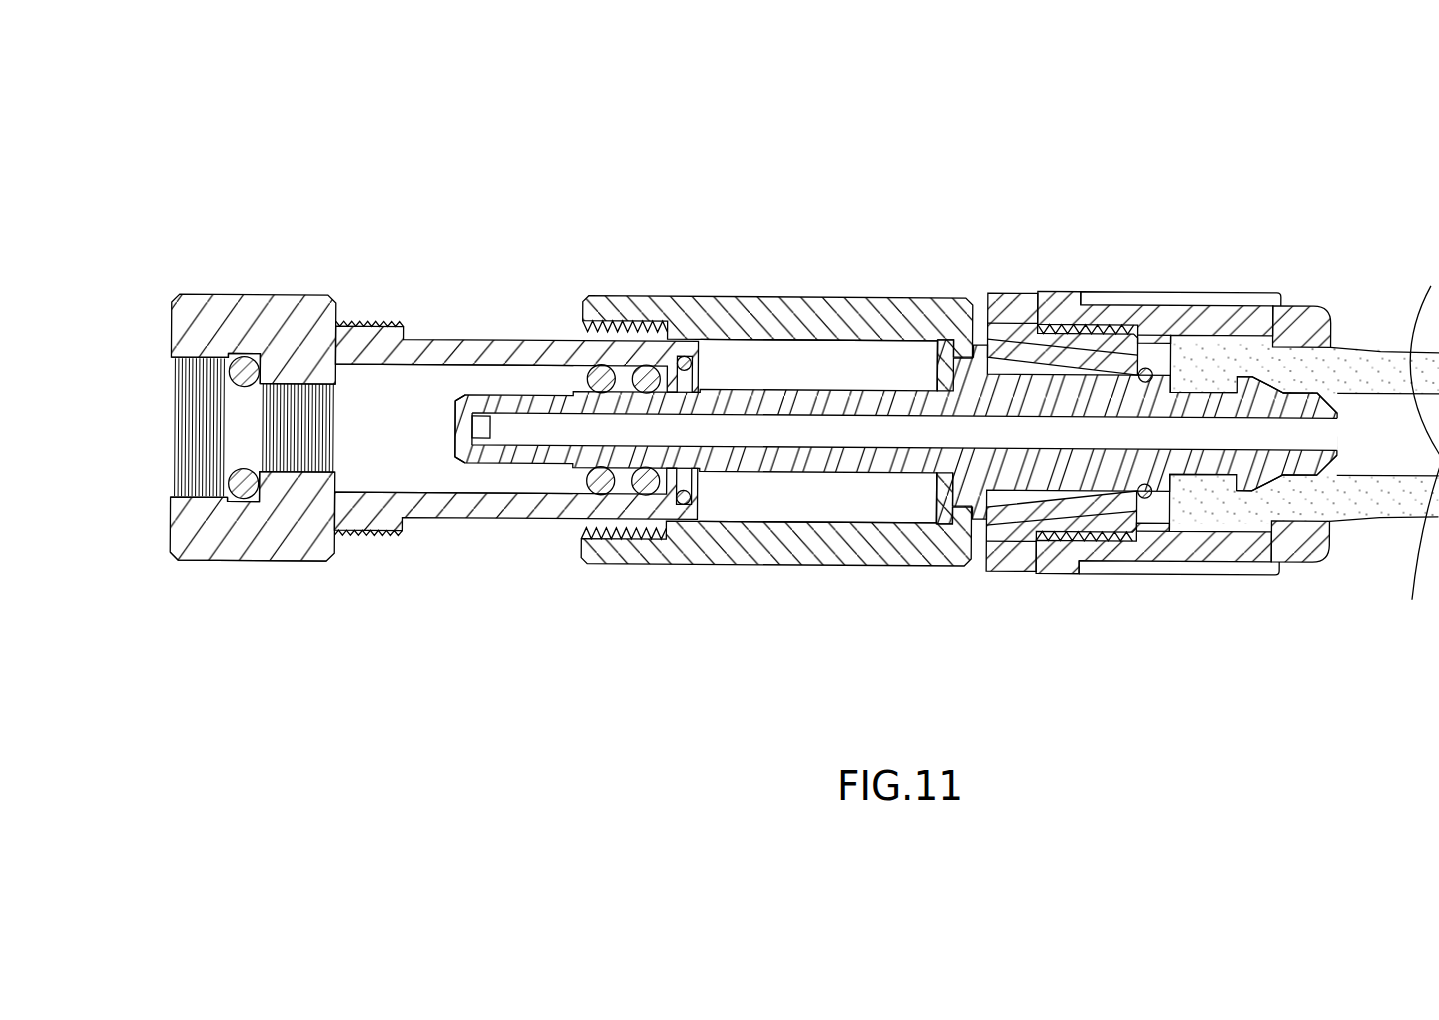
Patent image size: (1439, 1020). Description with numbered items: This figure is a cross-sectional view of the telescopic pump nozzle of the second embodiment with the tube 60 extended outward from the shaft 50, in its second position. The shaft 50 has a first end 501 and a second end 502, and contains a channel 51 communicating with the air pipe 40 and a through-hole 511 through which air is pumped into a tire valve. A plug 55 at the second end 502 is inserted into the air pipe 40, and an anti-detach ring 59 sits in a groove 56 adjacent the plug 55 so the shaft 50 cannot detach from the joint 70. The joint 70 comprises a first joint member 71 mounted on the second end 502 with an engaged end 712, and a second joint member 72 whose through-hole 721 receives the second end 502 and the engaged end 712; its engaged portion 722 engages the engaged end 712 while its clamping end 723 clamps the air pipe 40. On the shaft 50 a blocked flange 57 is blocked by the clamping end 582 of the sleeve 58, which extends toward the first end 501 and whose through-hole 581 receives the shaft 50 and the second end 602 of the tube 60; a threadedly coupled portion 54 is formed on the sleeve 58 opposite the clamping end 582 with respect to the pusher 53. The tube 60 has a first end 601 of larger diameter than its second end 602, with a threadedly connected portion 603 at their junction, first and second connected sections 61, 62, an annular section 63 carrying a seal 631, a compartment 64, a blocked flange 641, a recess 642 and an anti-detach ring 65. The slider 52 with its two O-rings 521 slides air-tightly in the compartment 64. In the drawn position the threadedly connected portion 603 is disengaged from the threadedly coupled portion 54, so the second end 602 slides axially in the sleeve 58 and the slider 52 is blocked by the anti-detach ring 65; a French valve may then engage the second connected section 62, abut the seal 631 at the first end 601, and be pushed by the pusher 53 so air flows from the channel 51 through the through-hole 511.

The air pipe 40 is at (1381, 372).
The shaft 50 is at (922, 440).
The first end 501 is at (470, 389).
The second end 502 is at (1281, 493).
The channel 51 is at (877, 435).
The through-hole 511 is at (478, 432).
The slider 52 is at (591, 516).
The O-rings 521 is at (590, 484).
The pusher 53 is at (462, 452).
The threadedly coupled portion 54 is at (805, 444).
The plug 55 is at (1262, 337).
The groove 56 is at (1146, 497).
The blocked flange 57 is at (967, 373).
The sleeve 58 is at (820, 308).
The through-hole 581 is at (892, 357).
The clamping end 582 is at (966, 514).
The anti-detach ring 59 is at (1146, 366).
The tube 60 is at (275, 404).
The first end 601 is at (188, 567).
The second end 602 is at (691, 540).
The threadedly connected portion 603 is at (387, 325).
The first connected section 61 is at (183, 361).
The second connected section 62 is at (288, 481).
The annular section 63 is at (250, 368).
The seal 631 is at (258, 363).
The compartment 64 is at (503, 439).
The blocked flange 641 is at (341, 325).
The recess 642 is at (663, 528).
The anti-detach ring 65 is at (684, 358).
The joint 70 is at (1169, 443).
The first joint member 71 is at (1065, 375).
The engaged end 712 is at (1063, 328).
The through-hole 721 is at (1084, 536).
The second joint member 72 is at (1195, 375).
The engaged portion 722 is at (1171, 340).
The clamping end 723 is at (1316, 326).